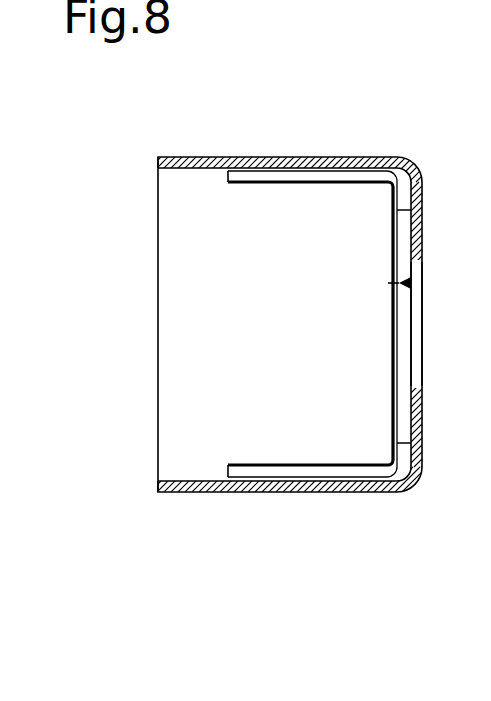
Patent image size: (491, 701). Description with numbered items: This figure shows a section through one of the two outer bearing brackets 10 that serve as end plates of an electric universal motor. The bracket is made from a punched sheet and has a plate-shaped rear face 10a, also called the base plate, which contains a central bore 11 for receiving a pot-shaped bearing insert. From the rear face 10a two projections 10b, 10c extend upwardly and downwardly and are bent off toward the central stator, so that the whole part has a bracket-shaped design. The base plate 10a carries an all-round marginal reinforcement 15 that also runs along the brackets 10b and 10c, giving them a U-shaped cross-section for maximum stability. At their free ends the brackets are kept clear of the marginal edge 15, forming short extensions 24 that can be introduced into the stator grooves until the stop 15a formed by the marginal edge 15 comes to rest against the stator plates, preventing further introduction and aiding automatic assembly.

The bearing bracket 10 is at (386, 158).
The plate-shaped rear face 10a is at (421, 247).
The projection 10b is at (244, 157).
The projection 10c is at (241, 493).
The central bore 11 is at (421, 392).
The marginal reinforcement 15 is at (301, 184).
The stop 15a is at (226, 177).
The short extension 24 is at (188, 170).